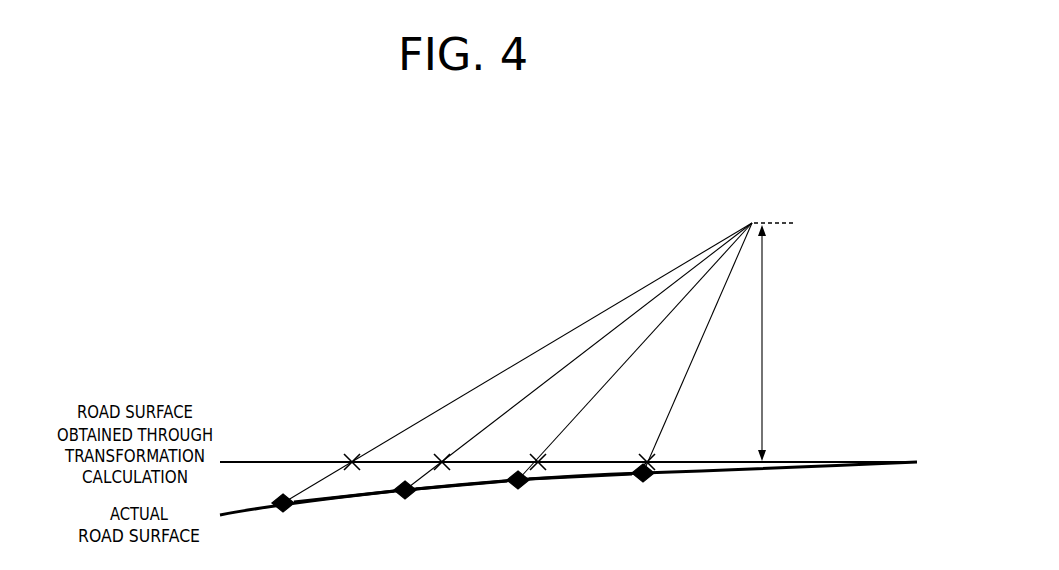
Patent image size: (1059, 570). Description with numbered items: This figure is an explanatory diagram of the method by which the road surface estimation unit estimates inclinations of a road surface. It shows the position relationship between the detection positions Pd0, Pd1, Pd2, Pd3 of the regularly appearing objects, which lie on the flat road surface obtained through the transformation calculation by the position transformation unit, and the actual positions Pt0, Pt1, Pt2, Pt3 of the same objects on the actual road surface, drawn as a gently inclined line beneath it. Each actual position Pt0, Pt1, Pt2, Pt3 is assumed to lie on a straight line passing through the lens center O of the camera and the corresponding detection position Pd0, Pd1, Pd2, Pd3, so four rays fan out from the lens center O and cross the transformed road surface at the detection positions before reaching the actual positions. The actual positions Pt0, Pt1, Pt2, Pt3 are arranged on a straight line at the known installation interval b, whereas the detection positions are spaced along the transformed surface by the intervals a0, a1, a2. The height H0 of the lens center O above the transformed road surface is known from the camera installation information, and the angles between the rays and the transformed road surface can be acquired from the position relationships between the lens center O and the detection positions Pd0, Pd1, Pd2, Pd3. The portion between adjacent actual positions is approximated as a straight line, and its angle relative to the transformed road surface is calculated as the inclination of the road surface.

The lens center O is at (764, 211).
The height of the lens center H0 is at (773, 343).
The detection position Pd3 is at (340, 449).
The detection position Pd2 is at (433, 449).
The detection position Pd1 is at (528, 448).
The detection position Pd0 is at (665, 450).
The actual position Pt3 is at (277, 517).
The actual position Pt2 is at (403, 506).
The actual position Pt1 is at (520, 493).
The actual position Pt0 is at (647, 487).
The interval between detection positions a2 is at (397, 451).
The interval between detection positions a1 is at (490, 450).
The interval between detection positions a0 is at (592, 450).
The installation interval b is at (463, 500).